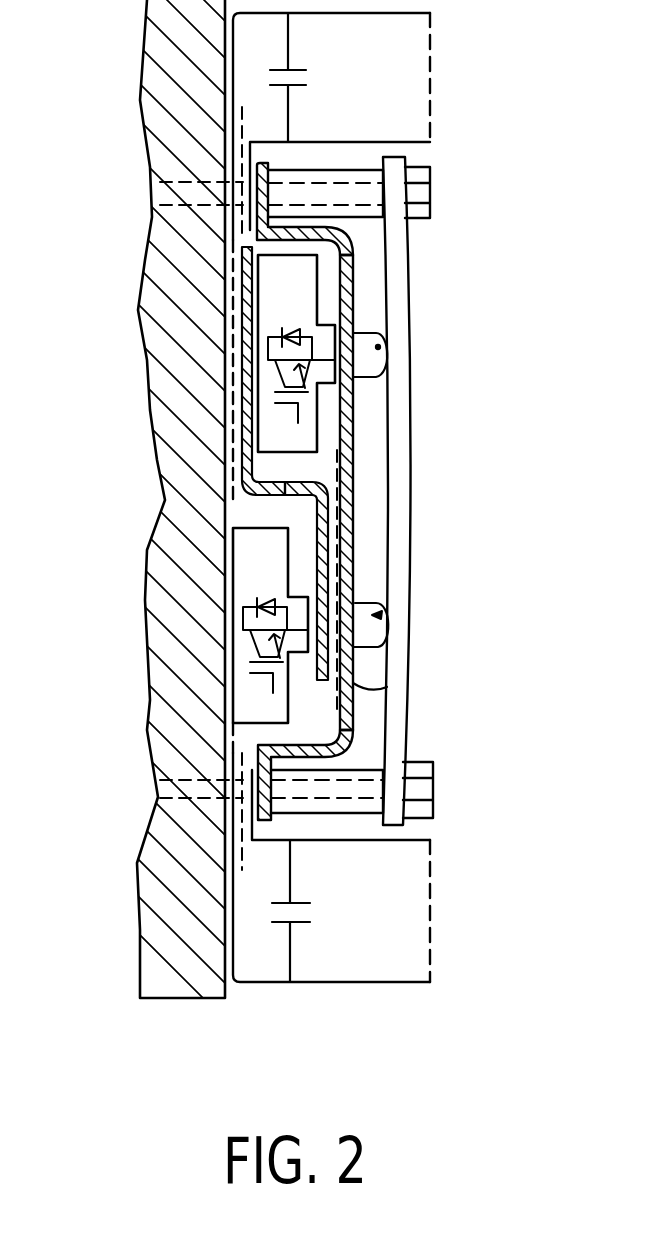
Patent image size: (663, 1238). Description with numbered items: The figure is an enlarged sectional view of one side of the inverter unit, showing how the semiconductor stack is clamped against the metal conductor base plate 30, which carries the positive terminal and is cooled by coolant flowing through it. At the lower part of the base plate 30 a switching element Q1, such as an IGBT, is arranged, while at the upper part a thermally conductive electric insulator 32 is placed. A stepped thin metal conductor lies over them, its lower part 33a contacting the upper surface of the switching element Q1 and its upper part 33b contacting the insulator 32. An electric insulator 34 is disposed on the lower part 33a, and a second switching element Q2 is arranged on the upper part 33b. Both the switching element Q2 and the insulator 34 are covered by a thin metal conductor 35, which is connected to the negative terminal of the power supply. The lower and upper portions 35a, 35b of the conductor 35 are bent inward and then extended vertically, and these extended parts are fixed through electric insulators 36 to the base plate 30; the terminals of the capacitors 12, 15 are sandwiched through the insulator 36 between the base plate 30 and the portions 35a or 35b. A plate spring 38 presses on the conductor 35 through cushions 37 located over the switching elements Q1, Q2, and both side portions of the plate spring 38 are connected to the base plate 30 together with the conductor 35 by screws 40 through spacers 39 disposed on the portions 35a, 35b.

The capacitor 12 is at (390, 85).
The capacitor 15 is at (407, 922).
The metal conductor base plate 30 is at (187, 50).
The electric insulator 32 is at (237, 368).
The lower part of thin metal conductor 33a is at (322, 530).
The upper part of thin metal conductor 33b is at (248, 417).
The electric insulator 34 is at (387, 687).
The thin metal conductor 35 is at (360, 412).
The lower bent portion of conductor 35a is at (282, 743).
The upper bent portion of conductor 35b is at (257, 230).
The electric insulator 36 is at (242, 127).
The cushion 37 is at (378, 347).
The plate spring 38 is at (413, 457).
The spacer 39 is at (367, 217).
The screw 40 is at (432, 192).
The switching element Q1 is at (247, 572).
The switching element Q2 is at (270, 292).